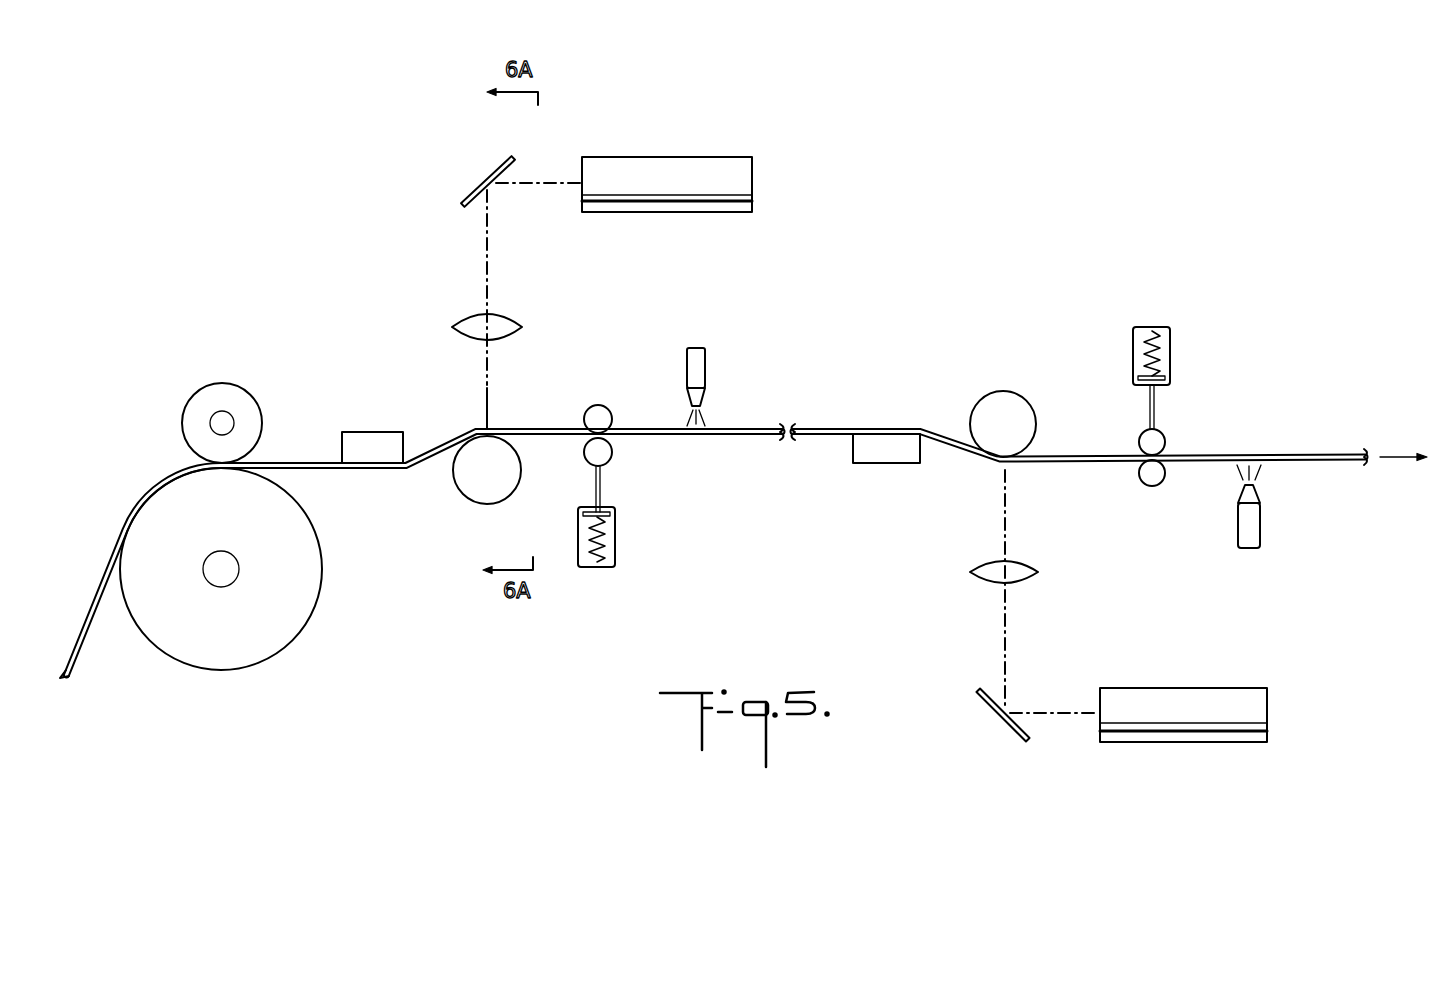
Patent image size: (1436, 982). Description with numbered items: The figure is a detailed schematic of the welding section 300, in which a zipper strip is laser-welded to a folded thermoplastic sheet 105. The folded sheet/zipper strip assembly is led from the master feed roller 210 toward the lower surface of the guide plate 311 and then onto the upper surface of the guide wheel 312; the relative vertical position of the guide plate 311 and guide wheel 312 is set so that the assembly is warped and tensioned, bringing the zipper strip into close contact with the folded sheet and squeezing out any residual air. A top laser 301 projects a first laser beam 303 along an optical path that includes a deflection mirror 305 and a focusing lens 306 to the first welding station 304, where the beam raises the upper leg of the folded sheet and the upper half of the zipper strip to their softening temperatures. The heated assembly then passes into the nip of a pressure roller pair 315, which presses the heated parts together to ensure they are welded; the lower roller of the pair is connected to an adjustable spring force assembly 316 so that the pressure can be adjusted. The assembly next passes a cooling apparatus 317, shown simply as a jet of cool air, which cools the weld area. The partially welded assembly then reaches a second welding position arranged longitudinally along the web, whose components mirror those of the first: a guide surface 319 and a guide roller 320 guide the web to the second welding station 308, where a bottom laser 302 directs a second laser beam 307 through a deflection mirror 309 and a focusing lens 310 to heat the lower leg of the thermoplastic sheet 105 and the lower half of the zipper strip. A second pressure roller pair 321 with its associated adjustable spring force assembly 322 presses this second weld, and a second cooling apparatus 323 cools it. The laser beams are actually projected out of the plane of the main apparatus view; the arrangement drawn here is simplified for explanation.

The thermoplastic sheet 105 is at (118, 557).
The master feed roller 210 is at (303, 617).
The welding section 300 is at (1028, 167).
The top laser 301 is at (745, 168).
The bottom laser 302 is at (1188, 693).
The first laser beam 303 is at (487, 390).
The first welding station 304 is at (505, 424).
The deflection mirror 305 is at (467, 190).
The focusing lens 306 is at (457, 325).
The second laser beam 307 is at (1008, 523).
The second welding station 308 is at (992, 473).
The deflection mirror 309 is at (982, 698).
The focusing lens 310 is at (982, 580).
The guide plate 311 is at (352, 435).
The guide wheel 312 is at (478, 503).
The pressure roller pair 315 is at (608, 418).
The adjustable spring force assembly 316 is at (615, 548).
The cooling apparatus 317 is at (705, 362).
The guide surface 319 is at (885, 468).
The guide roller 320 is at (998, 390).
The pressure roller pair 321 is at (1143, 443).
The adjustable spring force assembly 322 is at (1165, 343).
The cooling apparatus 323 is at (1257, 537).